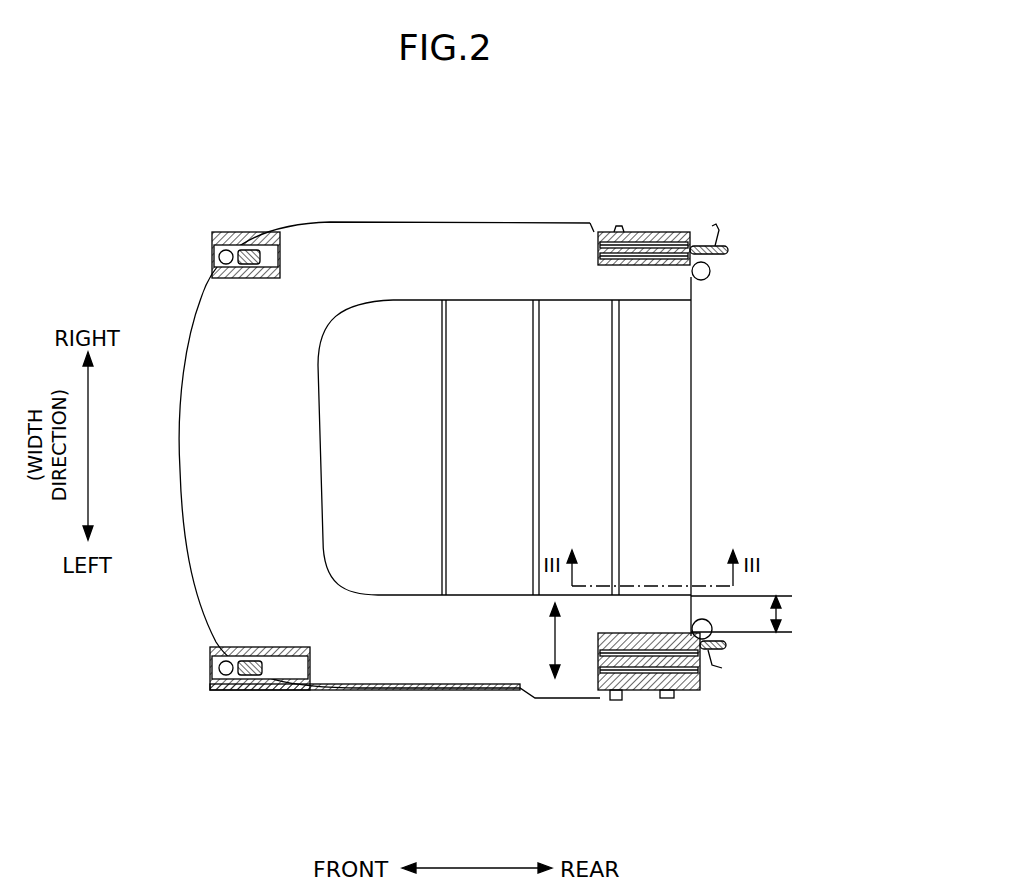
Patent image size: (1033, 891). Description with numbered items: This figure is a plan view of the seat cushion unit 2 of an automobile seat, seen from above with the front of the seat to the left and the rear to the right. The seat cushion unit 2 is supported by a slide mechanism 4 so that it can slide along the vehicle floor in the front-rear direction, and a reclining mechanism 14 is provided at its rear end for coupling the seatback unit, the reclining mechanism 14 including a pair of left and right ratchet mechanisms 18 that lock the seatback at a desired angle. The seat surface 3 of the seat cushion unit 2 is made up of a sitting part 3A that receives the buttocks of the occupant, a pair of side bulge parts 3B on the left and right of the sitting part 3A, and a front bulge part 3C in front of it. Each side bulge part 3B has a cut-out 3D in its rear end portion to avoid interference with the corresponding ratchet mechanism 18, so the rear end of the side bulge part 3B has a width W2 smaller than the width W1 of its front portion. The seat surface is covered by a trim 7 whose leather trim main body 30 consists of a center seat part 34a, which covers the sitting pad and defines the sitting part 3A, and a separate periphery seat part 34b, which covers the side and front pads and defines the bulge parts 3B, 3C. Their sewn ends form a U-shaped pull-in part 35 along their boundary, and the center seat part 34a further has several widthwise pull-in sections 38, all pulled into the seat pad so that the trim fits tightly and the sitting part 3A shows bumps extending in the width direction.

The seat cushion unit 2 is at (518, 462).
The seat surface 3 is at (453, 462).
The sitting part 3A is at (530, 447).
The side bulge part 3B is at (495, 438).
The front bulge part 3C is at (235, 381).
The cut-out 3D is at (660, 248).
The slide mechanism 4 is at (276, 700).
The trim 7 is at (342, 240).
The reclining mechanism 14 is at (688, 705).
The ratchet mechanism 18 is at (690, 252).
The trim main body 30 is at (435, 430).
The center seat part 34a is at (556, 345).
The periphery seat part 34b is at (402, 252).
The pull-in part 35 is at (323, 538).
The pull-in section 38 is at (447, 545).
The width of front portion of side bulge part W1 is at (552, 652).
The width of rear end portion of side bulge part W2 is at (785, 612).